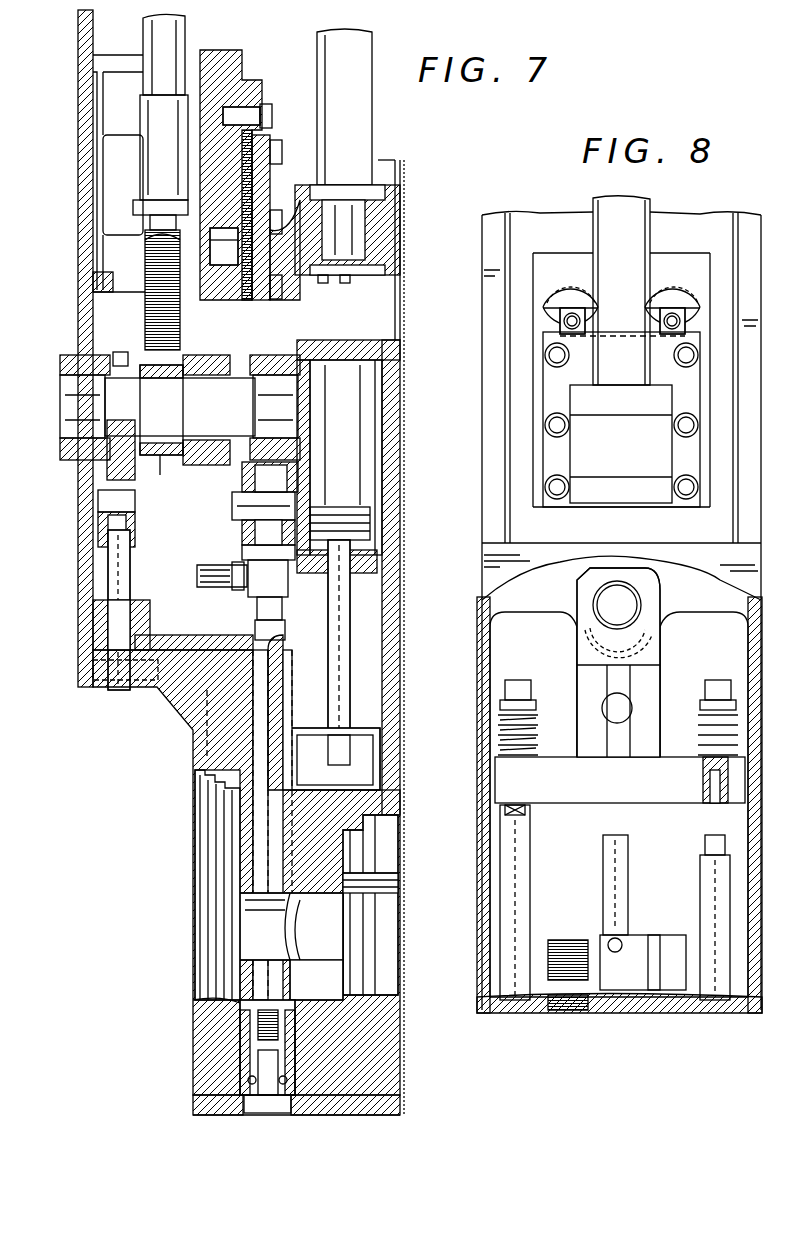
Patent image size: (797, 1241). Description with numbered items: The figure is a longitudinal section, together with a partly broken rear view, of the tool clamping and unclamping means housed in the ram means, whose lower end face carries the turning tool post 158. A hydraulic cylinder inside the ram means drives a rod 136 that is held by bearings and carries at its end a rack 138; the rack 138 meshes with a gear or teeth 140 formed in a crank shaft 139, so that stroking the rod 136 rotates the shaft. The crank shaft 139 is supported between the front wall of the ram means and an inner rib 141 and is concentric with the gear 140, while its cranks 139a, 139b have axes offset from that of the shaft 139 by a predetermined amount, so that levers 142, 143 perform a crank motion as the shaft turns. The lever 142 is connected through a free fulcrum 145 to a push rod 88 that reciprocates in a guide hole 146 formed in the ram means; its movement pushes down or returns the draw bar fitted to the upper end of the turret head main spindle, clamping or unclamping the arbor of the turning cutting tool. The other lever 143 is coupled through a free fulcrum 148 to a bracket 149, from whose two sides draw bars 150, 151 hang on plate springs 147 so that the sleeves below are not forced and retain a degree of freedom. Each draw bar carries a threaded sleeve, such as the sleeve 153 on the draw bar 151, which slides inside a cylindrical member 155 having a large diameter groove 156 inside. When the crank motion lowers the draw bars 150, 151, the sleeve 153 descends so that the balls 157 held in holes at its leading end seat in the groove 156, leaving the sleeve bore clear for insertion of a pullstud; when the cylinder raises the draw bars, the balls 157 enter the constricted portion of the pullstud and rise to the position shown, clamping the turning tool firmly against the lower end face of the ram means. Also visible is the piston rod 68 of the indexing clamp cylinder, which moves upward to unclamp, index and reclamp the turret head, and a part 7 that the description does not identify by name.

In FIG. 7, the hydraulic cylinder 7 is at (360, 392).
In FIG. 7, the piston rod 68 is at (342, 655).
In FIG. 8, the piston rod 68 is at (628, 850).
In FIG. 7, the push rod 88 is at (130, 579).
In FIG. 7, the rod 136 is at (186, 40).
In FIG. 7, the rack 138 is at (145, 306).
In FIG. 7, the crank shaft 139 is at (68, 397).
In FIG. 7, the crank 139a is at (130, 400).
In FIG. 7, the crank 139b is at (285, 405).
In FIG. 7, the gear or teeth 140 is at (165, 460).
In FIG. 7, the inner rib 141 is at (218, 314).
In FIG. 7, the lever 142 is at (135, 480).
In FIG. 7, the lever 143 is at (290, 452).
In FIG. 8, the lever 143 is at (662, 648).
In FIG. 7, the free fulcrum 145 is at (100, 505).
In FIG. 7, the guide hole 146 is at (135, 612).
In FIG. 8, the plate springs 147 is at (498, 733).
In FIG. 7, the free fulcrum 148 is at (235, 510).
In FIG. 8, the free fulcrum 148 is at (602, 708).
In FIG. 7, the bracket 149 is at (284, 575).
In FIG. 8, the bracket 149 is at (578, 683).
In FIG. 8, the draw bar 150 is at (528, 848).
In FIG. 7, the draw bar 151 is at (283, 630).
In FIG. 8, the draw bar 151 is at (705, 876).
In FIG. 7, the sleeve 153 is at (285, 1036).
In FIG. 7, the cylindrical member 155 is at (205, 1100).
In FIG. 7, the large diameter groove 156 is at (250, 1100).
In FIG. 7, the balls 157 is at (287, 1080).
In FIG. 7, the turning tool post 158 is at (385, 1110).